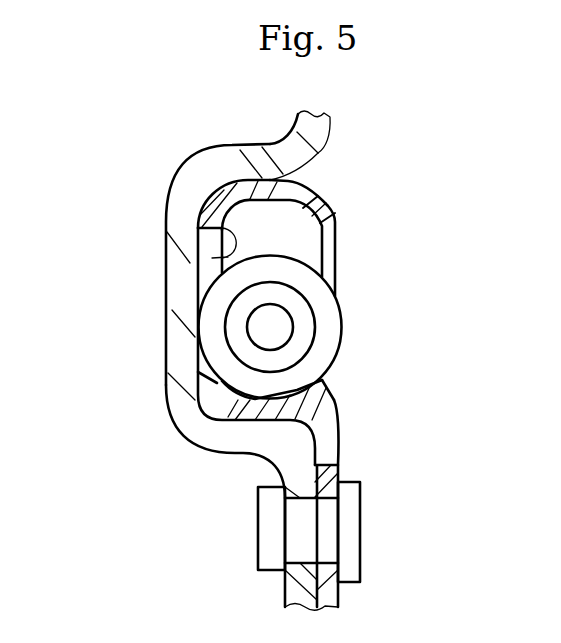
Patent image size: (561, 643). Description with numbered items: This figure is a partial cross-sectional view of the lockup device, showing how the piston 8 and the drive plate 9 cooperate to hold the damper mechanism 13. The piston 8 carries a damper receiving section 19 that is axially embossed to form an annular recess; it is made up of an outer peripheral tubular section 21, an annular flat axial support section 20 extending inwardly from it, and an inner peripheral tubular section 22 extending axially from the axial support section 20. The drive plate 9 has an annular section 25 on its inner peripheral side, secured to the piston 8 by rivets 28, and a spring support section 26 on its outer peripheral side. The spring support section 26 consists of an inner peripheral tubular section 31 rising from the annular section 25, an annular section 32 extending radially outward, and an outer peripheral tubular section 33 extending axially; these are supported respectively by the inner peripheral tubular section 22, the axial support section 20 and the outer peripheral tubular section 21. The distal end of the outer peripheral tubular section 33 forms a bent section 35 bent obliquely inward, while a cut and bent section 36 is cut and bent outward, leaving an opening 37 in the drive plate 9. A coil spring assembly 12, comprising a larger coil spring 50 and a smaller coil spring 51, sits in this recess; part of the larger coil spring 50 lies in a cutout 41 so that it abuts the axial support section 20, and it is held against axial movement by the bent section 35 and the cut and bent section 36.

The piston 8 is at (183, 120).
The drive plate 9 is at (420, 267).
The coil spring assembly 12 is at (356, 279).
The damper mechanism 13 is at (415, 132).
The damper receiving section 19 is at (141, 353).
The axial support section 20 is at (180, 293).
The outer peripheral tubular section 21 is at (263, 170).
The inner peripheral tubular section 22 is at (250, 430).
The annular section 25 is at (359, 468).
The spring support section 26 is at (365, 212).
The rivet 28 is at (320, 532).
The inner peripheral tubular section 31 is at (260, 403).
The annular section 32 is at (186, 260).
The outer peripheral tubular section 33 is at (318, 163).
The bent section 35 is at (322, 205).
The cut and bent section 36 is at (325, 392).
The opening 37 is at (327, 437).
The cutout 41 is at (210, 208).
The larger coil spring 50 is at (327, 312).
The smaller coil spring 51 is at (302, 330).